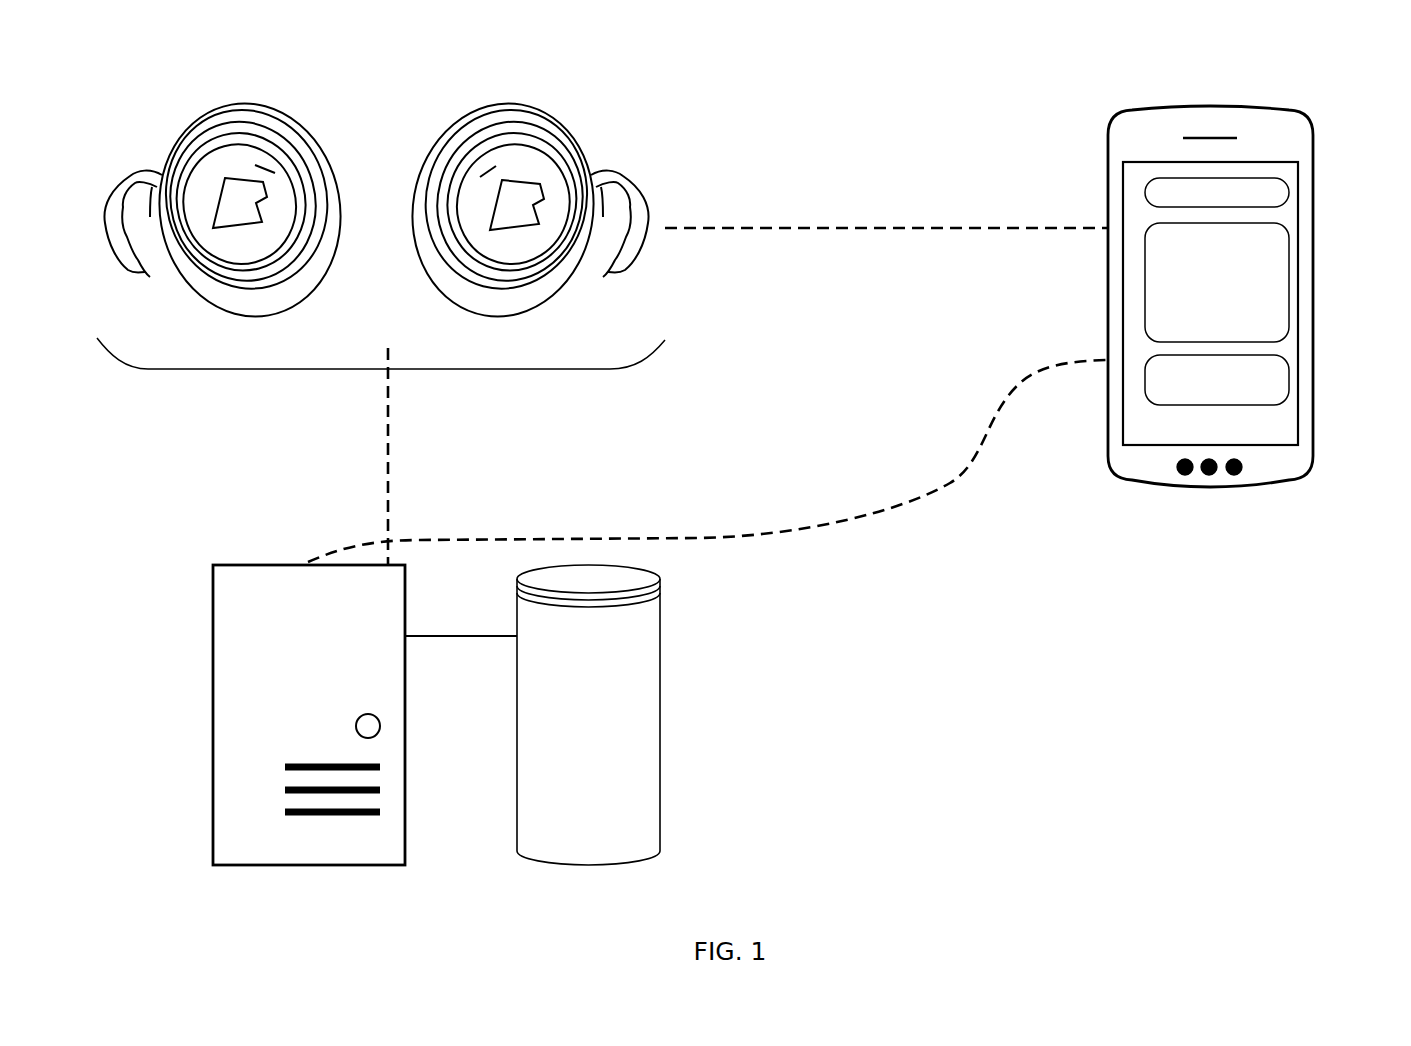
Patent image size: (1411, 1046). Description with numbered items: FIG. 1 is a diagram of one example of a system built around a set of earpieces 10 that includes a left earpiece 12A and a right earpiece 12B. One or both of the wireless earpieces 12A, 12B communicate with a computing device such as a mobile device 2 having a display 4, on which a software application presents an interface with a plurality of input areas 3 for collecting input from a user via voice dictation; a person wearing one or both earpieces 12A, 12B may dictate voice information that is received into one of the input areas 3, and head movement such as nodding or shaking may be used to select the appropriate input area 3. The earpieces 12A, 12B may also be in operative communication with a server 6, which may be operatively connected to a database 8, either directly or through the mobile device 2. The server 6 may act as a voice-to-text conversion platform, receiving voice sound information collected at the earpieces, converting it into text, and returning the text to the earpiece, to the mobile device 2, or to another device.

The mobile device 2 is at (1232, 107).
The input areas 3 is at (1288, 203).
The display 4 is at (1145, 437).
The server 6 is at (303, 580).
The database 8 is at (633, 636).
The set of earpieces 10 is at (365, 369).
The left earpiece 12A is at (245, 103).
The right earpiece 12B is at (515, 100).